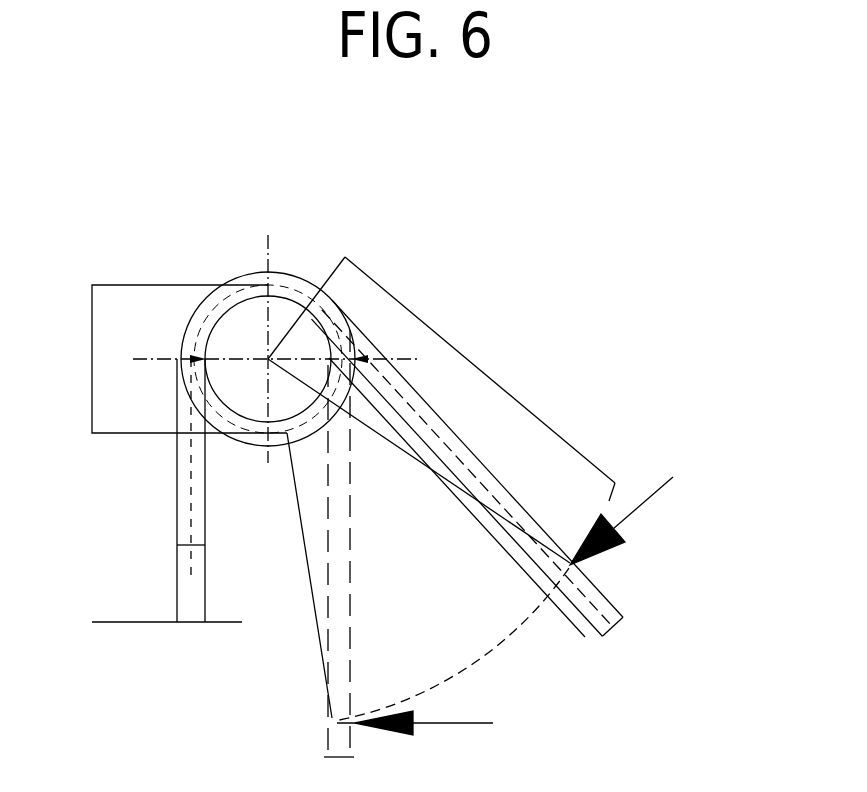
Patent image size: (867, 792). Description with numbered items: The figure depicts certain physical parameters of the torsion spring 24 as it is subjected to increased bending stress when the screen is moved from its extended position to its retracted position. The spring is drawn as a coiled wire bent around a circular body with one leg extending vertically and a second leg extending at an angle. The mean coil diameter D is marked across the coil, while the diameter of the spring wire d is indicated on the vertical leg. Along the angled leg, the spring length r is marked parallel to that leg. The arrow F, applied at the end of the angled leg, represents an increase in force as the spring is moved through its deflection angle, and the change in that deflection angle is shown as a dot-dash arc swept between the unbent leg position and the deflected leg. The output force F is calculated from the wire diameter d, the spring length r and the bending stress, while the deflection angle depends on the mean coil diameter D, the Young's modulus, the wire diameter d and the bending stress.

The torsion spring 24 is at (392, 216).
The mean coil diameter D is at (150, 359).
The diameter of the spring wire d is at (167, 577).
The spring length r is at (441, 379).
The output force F is at (640, 505).